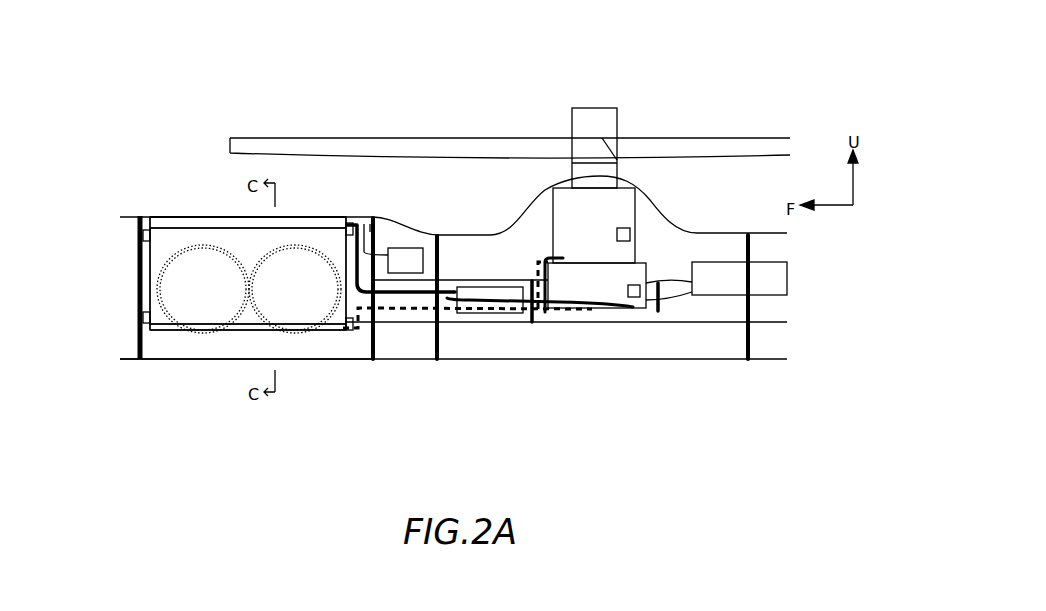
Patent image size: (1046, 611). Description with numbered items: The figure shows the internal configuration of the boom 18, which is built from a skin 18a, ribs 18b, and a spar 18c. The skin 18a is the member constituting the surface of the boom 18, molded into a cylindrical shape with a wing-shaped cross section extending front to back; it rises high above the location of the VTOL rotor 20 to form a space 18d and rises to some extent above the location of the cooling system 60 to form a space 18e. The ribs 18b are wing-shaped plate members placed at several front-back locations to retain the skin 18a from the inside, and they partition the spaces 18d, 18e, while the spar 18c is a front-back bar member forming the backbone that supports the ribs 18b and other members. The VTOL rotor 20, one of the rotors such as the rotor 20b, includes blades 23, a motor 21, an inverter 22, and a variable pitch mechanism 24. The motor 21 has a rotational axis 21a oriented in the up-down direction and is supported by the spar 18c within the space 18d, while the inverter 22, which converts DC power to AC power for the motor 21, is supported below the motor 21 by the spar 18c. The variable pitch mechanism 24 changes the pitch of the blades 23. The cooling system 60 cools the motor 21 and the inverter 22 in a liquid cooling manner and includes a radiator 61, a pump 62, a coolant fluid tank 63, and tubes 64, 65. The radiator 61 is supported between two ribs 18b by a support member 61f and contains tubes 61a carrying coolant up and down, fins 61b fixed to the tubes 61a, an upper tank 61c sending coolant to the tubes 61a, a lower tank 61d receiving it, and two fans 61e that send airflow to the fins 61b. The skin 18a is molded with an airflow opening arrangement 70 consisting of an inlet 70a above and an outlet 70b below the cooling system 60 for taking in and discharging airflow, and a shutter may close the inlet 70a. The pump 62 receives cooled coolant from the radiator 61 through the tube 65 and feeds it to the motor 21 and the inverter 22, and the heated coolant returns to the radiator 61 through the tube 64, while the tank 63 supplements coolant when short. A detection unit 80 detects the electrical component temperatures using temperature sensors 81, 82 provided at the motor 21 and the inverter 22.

The boom 18 is at (784, 347).
The skin 18a is at (647, 198).
The rib 18b is at (137, 362).
The spar 18c is at (463, 280).
The space 18d is at (539, 215).
The space 18e is at (177, 356).
The VTOL rotor 20 is at (616, 171).
The VTOL rotor 20b is at (557, 114).
The motor 21 is at (606, 238).
The rotational axis 21a is at (593, 120).
The inverter 22 is at (606, 301).
The blade 23 is at (457, 143).
The variable pitch mechanism 24 is at (596, 172).
The cooling system 60 is at (124, 285).
The radiator 61 is at (157, 256).
The tubes 61a is at (228, 240).
The fins 61b is at (228, 240).
The upper tank 61c is at (180, 223).
The lower tank 61d is at (230, 332).
The fans 61e is at (208, 302).
The support member 61f is at (147, 235).
The pump 62 is at (490, 295).
The coolant fluid tank 63 is at (405, 258).
The tube 64 is at (352, 250).
The tube 65 is at (488, 315).
The battery pack 70 is at (145, 197).
The inlet 70a is at (244, 196).
The outlet 70b is at (322, 374).
The detection unit 80 is at (665, 181).
The temperature sensor 81 is at (632, 232).
The temperature sensor 82 is at (642, 286).